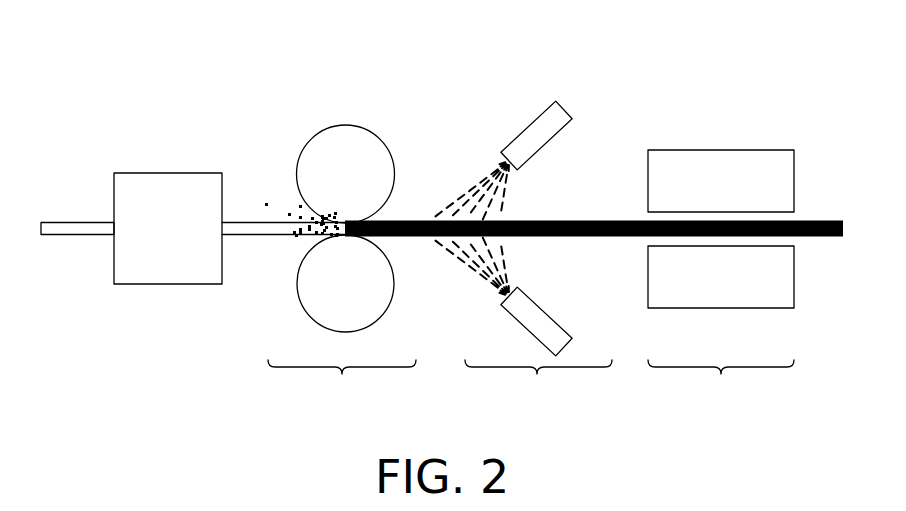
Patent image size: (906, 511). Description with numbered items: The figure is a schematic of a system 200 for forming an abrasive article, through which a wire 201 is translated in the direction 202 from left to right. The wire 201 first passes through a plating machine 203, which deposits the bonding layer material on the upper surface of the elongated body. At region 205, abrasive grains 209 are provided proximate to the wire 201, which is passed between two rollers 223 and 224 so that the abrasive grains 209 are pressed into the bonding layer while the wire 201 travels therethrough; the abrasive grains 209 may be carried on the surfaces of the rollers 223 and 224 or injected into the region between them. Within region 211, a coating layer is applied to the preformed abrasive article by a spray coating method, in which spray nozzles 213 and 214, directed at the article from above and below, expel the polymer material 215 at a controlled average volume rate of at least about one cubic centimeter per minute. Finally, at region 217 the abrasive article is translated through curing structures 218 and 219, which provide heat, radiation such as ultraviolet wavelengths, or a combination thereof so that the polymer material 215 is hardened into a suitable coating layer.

The system 200 is at (191, 53).
The wire 201 is at (92, 234).
The direction 202 is at (90, 188).
The plating machine 203 is at (150, 235).
The region 205 is at (342, 381).
The abrasive grains 209 is at (279, 157).
The region 211 is at (538, 381).
The spray nozzle 213 is at (552, 102).
The spray nozzle 214 is at (513, 313).
The polymer material 215 is at (466, 151).
The region 217 is at (721, 381).
The curing structure 218 is at (703, 186).
The curing structure 219 is at (703, 283).
The roller 223 is at (327, 184).
The roller 224 is at (327, 293).